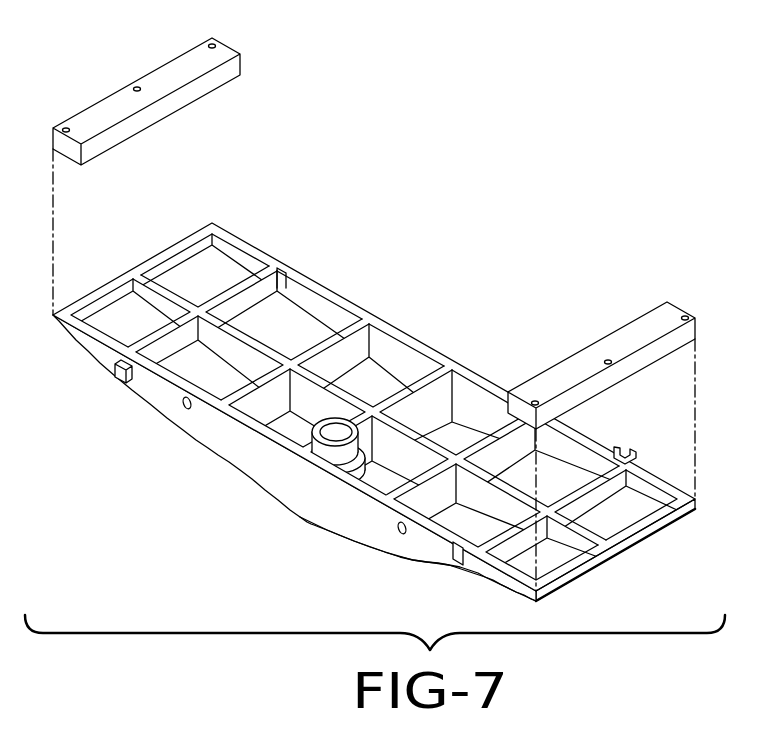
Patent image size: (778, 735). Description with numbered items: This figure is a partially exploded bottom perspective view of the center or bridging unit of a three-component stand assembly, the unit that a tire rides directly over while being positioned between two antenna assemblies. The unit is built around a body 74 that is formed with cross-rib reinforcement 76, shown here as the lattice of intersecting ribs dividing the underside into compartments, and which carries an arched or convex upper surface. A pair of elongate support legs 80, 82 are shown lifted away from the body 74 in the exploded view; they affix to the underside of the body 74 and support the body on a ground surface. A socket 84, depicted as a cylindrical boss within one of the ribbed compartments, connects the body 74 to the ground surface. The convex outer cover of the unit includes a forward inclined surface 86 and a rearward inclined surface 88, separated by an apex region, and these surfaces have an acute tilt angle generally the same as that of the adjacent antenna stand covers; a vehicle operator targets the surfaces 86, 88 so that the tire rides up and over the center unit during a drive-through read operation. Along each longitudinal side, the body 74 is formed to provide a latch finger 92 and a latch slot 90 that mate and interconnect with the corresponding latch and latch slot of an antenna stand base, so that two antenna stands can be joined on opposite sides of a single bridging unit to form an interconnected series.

The body 74 is at (366, 426).
The cross-rib reinforcement 76 is at (222, 322).
The elongate support leg 80 is at (168, 73).
The elongate support leg 82 is at (652, 318).
The socket 84 is at (314, 426).
The forward inclined surface 86 is at (183, 430).
The rearward inclined surface 88 is at (397, 555).
The latch slot 90 is at (453, 563).
The latch finger 92 is at (118, 372).